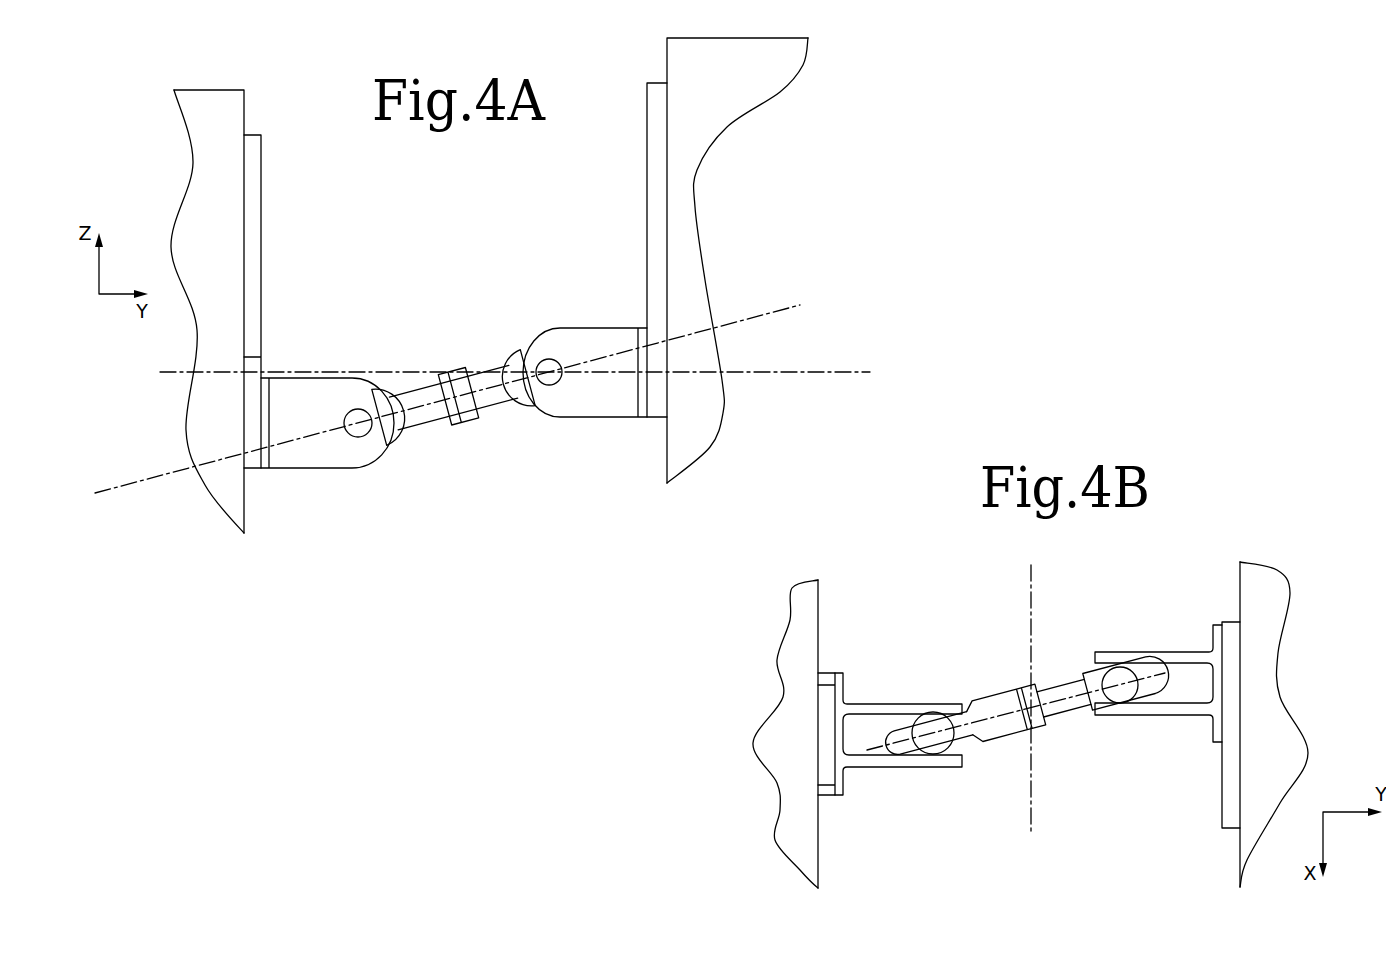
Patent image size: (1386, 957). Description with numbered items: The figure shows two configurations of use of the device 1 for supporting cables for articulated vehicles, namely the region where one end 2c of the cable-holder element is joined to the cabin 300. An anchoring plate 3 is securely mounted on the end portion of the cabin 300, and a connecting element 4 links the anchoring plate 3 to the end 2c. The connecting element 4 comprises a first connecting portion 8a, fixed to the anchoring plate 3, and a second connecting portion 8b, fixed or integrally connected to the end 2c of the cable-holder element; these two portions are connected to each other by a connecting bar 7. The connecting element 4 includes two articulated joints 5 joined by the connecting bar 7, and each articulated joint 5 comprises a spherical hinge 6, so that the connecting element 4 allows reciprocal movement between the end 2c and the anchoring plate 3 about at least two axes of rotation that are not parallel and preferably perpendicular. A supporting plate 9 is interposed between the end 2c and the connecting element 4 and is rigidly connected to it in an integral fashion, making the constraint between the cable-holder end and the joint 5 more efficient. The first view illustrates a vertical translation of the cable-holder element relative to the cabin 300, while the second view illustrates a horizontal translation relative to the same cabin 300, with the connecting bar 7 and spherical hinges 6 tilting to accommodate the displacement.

In FIG. 4A, the device for supporting cables 1 is at (251, 560).
In FIG. 4B, the device for supporting cables 1 is at (746, 852).
In FIG. 4A, the end 2c is at (223, 120).
In FIG. 4B, the end 2c is at (807, 595).
In FIG. 4A, the anchoring plate 3 is at (657, 108).
In FIG. 4B, the anchoring plate 3 is at (1228, 632).
In FIG. 4A, the connecting element 4 is at (490, 456).
In FIG. 4B, the connecting element 4 is at (992, 809).
In FIG. 4A, the articulated joint 5 is at (381, 491).
In FIG. 4B, the articulated joint 5 is at (941, 796).
In FIG. 4A, the spherical hinge 6 is at (360, 437).
In FIG. 4B, the spherical hinge 6 is at (928, 754).
In FIG. 4A, the connecting bar 7 is at (428, 390).
In FIG. 4B, the connecting bar 7 is at (1058, 693).
In FIG. 4A, the first connecting portion 8a is at (587, 340).
In FIG. 4B, the first connecting portion 8a is at (1142, 652).
In FIG. 4A, the second connecting portion 8b is at (310, 395).
In FIG. 4B, the second connecting portion 8b is at (887, 707).
In FIG. 4A, the supporting plate 9 is at (255, 188).
In FIG. 4B, the supporting plate 9 is at (827, 697).
In FIG. 4A, the cabin 300 is at (777, 67).
In FIG. 4B, the cabin 300 is at (1267, 600).